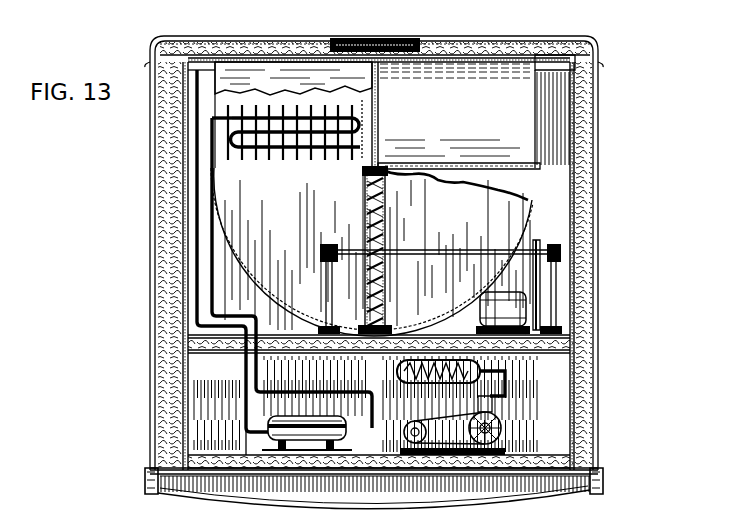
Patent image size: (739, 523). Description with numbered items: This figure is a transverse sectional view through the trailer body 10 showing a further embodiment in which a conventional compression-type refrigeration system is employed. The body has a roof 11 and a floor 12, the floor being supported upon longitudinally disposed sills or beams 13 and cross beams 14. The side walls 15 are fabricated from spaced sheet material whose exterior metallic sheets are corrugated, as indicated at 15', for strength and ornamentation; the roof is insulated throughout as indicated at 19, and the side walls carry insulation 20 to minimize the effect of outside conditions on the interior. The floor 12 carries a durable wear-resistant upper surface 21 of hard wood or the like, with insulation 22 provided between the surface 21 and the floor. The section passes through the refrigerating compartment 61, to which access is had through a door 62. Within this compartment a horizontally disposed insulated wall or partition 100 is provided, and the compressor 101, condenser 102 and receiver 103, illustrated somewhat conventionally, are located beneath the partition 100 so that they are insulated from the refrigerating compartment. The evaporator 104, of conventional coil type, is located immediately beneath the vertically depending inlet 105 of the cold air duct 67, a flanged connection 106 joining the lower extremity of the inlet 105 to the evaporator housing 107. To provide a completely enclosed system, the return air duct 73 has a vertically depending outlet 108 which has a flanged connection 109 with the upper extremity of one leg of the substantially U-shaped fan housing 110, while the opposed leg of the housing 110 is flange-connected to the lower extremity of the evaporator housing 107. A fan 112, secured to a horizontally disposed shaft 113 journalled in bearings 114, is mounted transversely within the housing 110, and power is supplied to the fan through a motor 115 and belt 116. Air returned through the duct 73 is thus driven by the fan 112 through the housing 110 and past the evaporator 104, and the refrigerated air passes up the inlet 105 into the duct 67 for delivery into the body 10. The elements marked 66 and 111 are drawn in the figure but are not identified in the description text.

The trailer body 10 is at (608, 124).
The roof 11 is at (233, 35).
The floor 12 is at (349, 468).
The sills or beams 13 is at (144, 485).
The cross beams 14 is at (552, 494).
The side walls 15 is at (371, 266).
The corrugated exterior sheets of side walls 15' is at (373, 141).
The roof insulation 19 is at (458, 40).
The side and end wall insulation 20 is at (170, 370).
The upper surface 21 is at (250, 462).
The floor insulation 22 is at (430, 463).
The refrigerating compartment 61 is at (232, 276).
The door 62 is at (336, 376).
The top vent grille 66 is at (370, 37).
The L-shaped duct 67 is at (289, 59).
The return air duct 73 is at (491, 72).
The insulated partition 100 is at (228, 352).
The compressor 101 is at (491, 404).
The condenser 102 is at (466, 362).
The receiver 103 is at (312, 418).
The evaporator 104 is at (309, 152).
The inlet of cold air duct 105 is at (302, 85).
The flanged connection 106 is at (372, 101).
The evaporator housing 107 is at (372, 138).
The outlet of return duct 108 is at (496, 134).
The flanged connection 109 is at (514, 165).
The fan housing 110 is at (271, 288).
The refrigerant tube 111 is at (217, 173).
The fan 112 is at (368, 225).
The shaft 113 is at (448, 250).
The bearings 114 is at (320, 255).
The motor 115 is at (526, 298).
The belt 116 is at (535, 238).